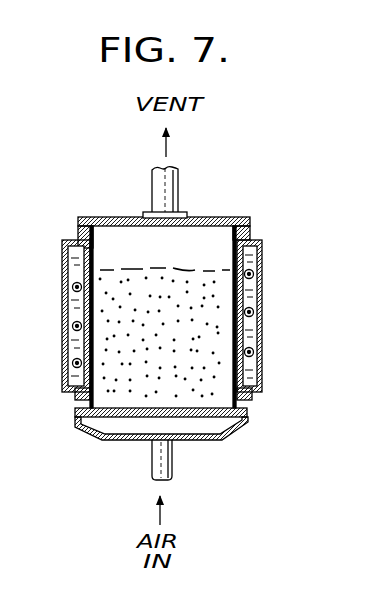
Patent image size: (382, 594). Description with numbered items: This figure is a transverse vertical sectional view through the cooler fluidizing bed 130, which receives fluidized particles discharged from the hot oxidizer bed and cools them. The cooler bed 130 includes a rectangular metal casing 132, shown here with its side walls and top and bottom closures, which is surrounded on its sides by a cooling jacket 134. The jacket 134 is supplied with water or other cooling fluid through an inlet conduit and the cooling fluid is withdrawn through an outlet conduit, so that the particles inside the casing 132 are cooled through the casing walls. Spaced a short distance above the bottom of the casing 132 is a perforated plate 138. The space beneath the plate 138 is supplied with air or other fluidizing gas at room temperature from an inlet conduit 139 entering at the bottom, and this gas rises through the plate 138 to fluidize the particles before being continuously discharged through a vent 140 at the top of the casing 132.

The cooler fluidizing bed 130 is at (245, 221).
The rectangular metal casing 132 is at (112, 217).
The cooling jacket 134 is at (260, 297).
The perforated plate 138 is at (215, 425).
The inlet conduit 139 is at (152, 462).
The vent pipe 140 is at (178, 177).